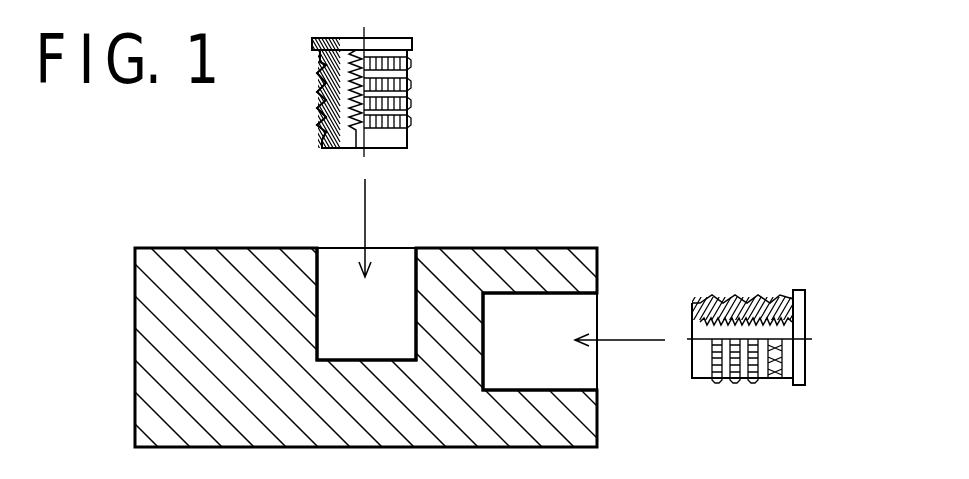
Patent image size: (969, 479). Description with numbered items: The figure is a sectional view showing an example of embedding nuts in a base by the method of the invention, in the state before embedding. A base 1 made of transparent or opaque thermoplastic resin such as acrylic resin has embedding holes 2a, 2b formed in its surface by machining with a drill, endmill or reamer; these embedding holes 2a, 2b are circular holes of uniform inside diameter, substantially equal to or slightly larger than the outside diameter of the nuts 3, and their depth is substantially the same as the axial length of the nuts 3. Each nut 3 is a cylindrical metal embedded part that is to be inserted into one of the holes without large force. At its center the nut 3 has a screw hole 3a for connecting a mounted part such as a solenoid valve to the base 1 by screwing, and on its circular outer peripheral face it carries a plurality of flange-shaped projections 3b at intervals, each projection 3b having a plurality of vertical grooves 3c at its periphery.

The base 1 is at (187, 272).
The embedding hole 2a is at (415, 297).
The embedding hole 2b is at (572, 302).
The nut 3 is at (540, 227).
The screw hole 3a is at (352, 62).
The flange-shaped projection 3b is at (320, 88).
The vertical groove 3c is at (392, 130).